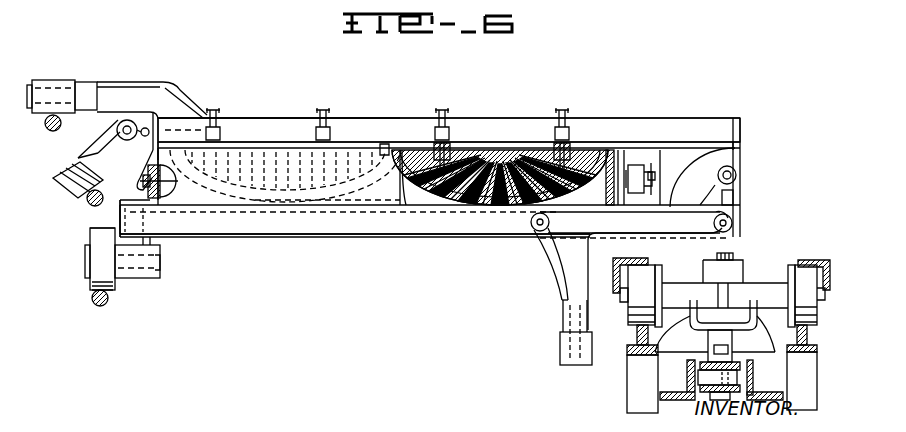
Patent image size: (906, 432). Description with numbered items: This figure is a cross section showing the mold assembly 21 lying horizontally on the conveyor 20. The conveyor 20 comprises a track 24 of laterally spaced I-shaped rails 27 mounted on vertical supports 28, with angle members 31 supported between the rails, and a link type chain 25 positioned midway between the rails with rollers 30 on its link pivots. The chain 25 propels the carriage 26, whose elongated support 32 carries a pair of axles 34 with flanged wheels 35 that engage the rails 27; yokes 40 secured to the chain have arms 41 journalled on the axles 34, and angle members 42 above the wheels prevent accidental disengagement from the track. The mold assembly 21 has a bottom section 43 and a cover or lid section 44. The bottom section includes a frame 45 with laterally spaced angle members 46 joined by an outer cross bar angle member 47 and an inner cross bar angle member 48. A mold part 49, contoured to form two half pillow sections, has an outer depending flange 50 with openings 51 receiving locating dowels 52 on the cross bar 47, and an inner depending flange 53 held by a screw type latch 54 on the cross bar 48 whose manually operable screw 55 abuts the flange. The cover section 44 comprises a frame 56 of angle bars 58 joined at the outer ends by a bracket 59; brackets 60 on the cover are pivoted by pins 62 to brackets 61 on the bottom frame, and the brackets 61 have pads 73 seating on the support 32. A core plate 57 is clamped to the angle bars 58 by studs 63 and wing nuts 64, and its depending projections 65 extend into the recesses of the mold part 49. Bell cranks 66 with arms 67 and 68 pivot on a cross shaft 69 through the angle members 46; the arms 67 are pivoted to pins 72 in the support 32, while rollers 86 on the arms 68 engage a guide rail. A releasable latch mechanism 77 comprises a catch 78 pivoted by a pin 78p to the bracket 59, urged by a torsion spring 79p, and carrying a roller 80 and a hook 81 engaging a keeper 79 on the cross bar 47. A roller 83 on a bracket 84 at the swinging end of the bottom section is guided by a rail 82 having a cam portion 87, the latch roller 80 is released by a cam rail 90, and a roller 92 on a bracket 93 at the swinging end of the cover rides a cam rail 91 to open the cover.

The conveyor 20 is at (775, 270).
The mold assembly 21 is at (532, 115).
The track 24 is at (635, 366).
The link type chain 25 is at (712, 378).
The carriage 26 is at (750, 262).
The rails 27 is at (807, 340).
The vertical supports 28 is at (795, 380).
The rollers 30 is at (753, 372).
The angle members 31 is at (778, 396).
The support 32 is at (749, 251).
The axles 34 is at (622, 300).
The flanged wheels 35 is at (808, 262).
The yokes 40 is at (695, 344).
The arms 41 is at (705, 330).
The angle members 42 is at (810, 262).
The bottom section 43 is at (390, 194).
The cover or lid section 44 is at (413, 112).
The frame 45 is at (362, 247).
The angle members 46 is at (287, 230).
The angle member 47 is at (153, 192).
The angle member 48 is at (622, 160).
The mold part 49 is at (410, 205).
The depending flange 50 is at (150, 185).
The openings 51 is at (170, 182).
The locating dowels 52 is at (176, 180).
The depending flange 53 is at (606, 180).
The screw type latch 54 is at (640, 172).
The screw 55 is at (656, 180).
The frame 56 is at (286, 109).
The core plate 57 is at (470, 135).
The angle bars 58 is at (360, 125).
The bracket 59 is at (742, 118).
The brackets 60 is at (736, 150).
The brackets 61 is at (735, 195).
The pins 62 is at (735, 172).
The studs 63 is at (572, 150).
The wing nuts 64 is at (566, 112).
The depending projections 65 is at (492, 200).
The bell cranks 66 is at (552, 287).
The arms 67 is at (705, 240).
The arms 68 is at (556, 250).
The cross shaft 69 is at (535, 232).
The pins 72 is at (634, 222).
The pads 73 is at (718, 180).
The releasable latch mechanism 77 is at (80, 152).
The catch 78 is at (103, 145).
The pin 78p is at (124, 140).
The keeper 79 is at (143, 166).
The torsion spring 79p is at (147, 115).
The roller 80 is at (58, 172).
The hook 81 is at (140, 150).
The rail 82 is at (89, 305).
The roller 83 is at (90, 285).
The bracket 84 is at (160, 272).
The rollers 86 is at (560, 342).
The cam portion 87 is at (108, 303).
The cam rail 90 is at (88, 205).
The cam rail 91 is at (50, 132).
The roller 92 is at (58, 78).
The bracket 93 is at (135, 92).